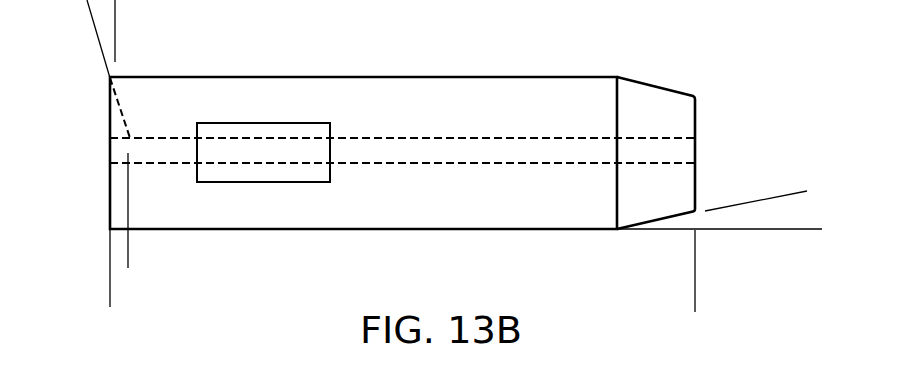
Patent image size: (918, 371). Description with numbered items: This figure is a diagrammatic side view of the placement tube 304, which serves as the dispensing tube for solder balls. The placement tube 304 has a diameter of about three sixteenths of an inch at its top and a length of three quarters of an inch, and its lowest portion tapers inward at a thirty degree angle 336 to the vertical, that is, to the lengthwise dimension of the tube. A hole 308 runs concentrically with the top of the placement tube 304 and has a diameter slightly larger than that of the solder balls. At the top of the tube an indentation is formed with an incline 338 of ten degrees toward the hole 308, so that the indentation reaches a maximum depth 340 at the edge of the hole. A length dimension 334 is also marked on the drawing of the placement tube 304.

The placement tube 304 is at (555, 77).
The hole 308 is at (160, 148).
The length dimension 334 is at (694, 291).
The angle 336 is at (778, 160).
The incline 338 is at (150, 30).
The maximum depth 340 is at (67, 252).